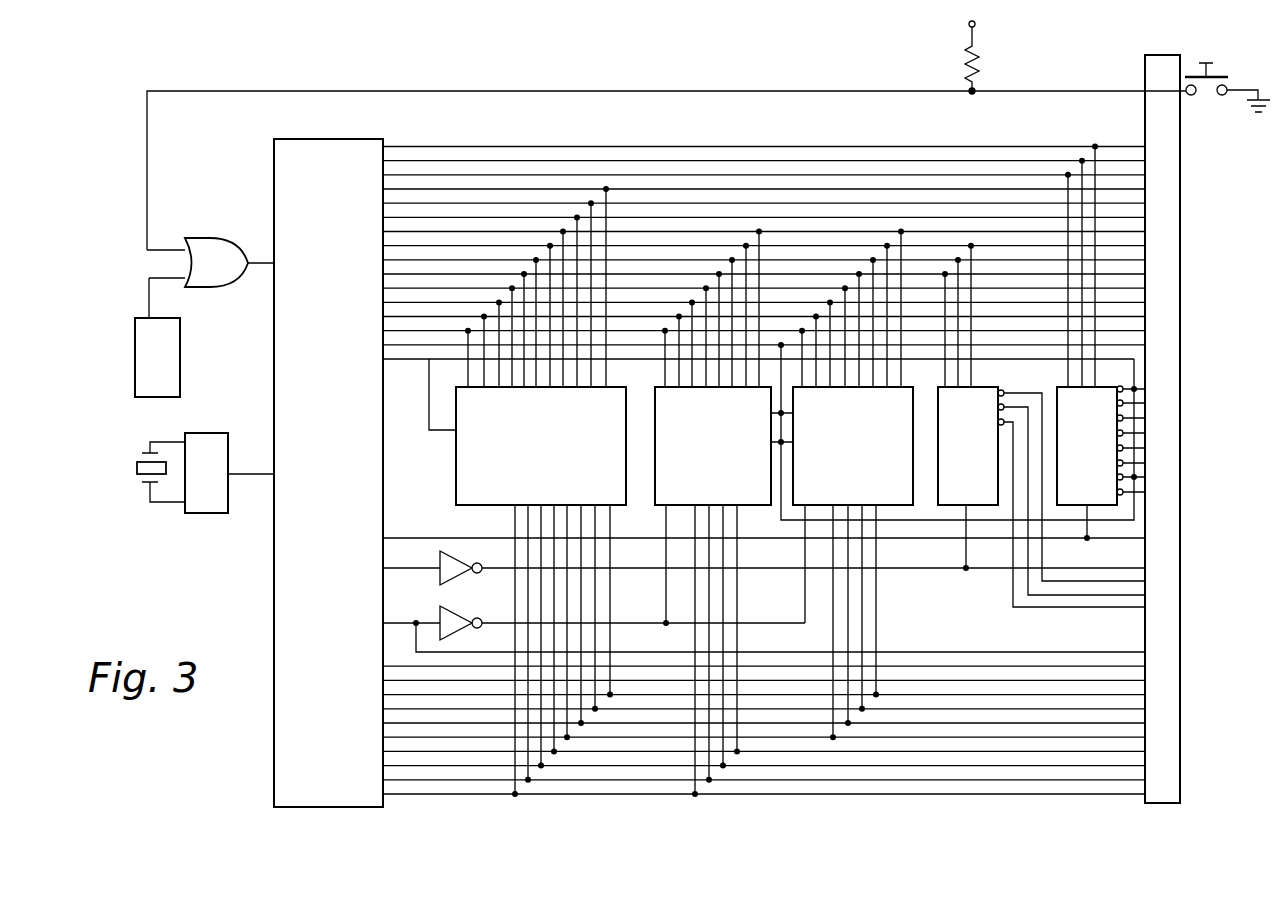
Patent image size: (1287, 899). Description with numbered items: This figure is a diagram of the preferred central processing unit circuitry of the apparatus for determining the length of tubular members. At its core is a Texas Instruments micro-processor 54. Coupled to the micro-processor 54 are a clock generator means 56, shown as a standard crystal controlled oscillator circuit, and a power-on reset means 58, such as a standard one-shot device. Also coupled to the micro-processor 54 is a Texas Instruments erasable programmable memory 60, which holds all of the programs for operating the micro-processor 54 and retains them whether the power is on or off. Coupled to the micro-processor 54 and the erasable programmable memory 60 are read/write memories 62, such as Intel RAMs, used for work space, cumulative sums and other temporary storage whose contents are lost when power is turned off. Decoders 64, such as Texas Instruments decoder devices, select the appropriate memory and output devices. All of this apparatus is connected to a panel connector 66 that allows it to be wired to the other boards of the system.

The micro-processor 54 is at (313, 492).
The clock generator means 56 is at (203, 440).
The power-on reset means 58 is at (168, 342).
The erasable programmable memory 60 is at (528, 485).
The read/write memories 62 is at (700, 485).
The decoders 64 is at (957, 487).
The panel connector 66 is at (1160, 212).